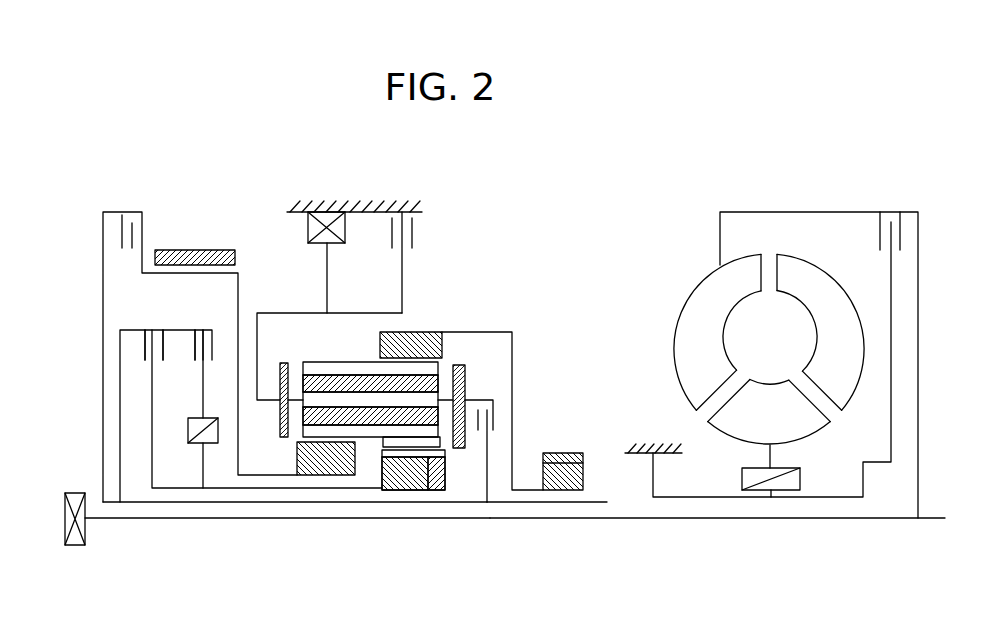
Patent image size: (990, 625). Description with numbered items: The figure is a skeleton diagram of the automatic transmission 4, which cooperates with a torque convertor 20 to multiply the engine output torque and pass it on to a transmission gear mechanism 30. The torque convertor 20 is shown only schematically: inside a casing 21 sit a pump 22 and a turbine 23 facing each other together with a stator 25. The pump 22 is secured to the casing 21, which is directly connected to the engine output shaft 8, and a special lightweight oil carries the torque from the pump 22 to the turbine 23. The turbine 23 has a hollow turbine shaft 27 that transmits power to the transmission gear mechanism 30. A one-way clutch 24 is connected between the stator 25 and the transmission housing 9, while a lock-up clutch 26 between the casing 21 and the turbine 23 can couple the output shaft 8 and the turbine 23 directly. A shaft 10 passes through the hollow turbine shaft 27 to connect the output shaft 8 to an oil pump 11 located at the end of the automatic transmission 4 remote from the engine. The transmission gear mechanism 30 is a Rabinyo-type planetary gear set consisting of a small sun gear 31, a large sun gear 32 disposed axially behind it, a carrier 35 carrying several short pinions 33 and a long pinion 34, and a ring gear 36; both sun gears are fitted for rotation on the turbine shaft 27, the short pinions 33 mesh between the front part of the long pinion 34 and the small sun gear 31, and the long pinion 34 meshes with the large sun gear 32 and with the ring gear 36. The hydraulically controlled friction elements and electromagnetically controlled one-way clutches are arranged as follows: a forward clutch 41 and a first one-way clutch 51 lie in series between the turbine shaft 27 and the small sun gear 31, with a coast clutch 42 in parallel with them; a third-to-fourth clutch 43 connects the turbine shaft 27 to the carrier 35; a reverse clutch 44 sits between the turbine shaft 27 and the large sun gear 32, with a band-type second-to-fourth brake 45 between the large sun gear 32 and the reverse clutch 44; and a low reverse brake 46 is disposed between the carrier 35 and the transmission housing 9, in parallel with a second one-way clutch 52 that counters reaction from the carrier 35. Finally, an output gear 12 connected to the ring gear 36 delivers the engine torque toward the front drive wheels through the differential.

The automatic transmission 4 is at (706, 209).
The output shaft 8 is at (860, 519).
The transmission housing 9 is at (365, 212).
The shaft 10 is at (187, 519).
The oil pump 11 is at (88, 522).
The output gear 12 is at (567, 453).
The torque convertor 20 is at (690, 265).
The casing 21 is at (800, 212).
The pump 22 is at (685, 325).
The turbine 23 is at (838, 290).
The one-way clutch 24 is at (800, 478).
The stator 25 is at (765, 385).
The lock-up clutch 26 is at (918, 214).
The turbine shaft 27 is at (605, 502).
The transmission gear mechanism 30 is at (478, 265).
The small sun gear 31 is at (400, 491).
The large sun gear 32 is at (335, 476).
The short pinions 33 is at (437, 491).
The long pinion 34 is at (316, 368).
The carrier 35 is at (464, 365).
The ring gear 36 is at (420, 332).
The forward clutch 41 is at (197, 330).
The coast clutch 42 is at (145, 330).
The 3-4 clutch 43 is at (492, 400).
The reverse clutch 44 is at (143, 238).
The 2-4 brake 45 is at (215, 250).
The low reverse brake 46 is at (412, 232).
The first one-way clutch 51 is at (193, 418).
The second one-way clutch 52 is at (310, 236).